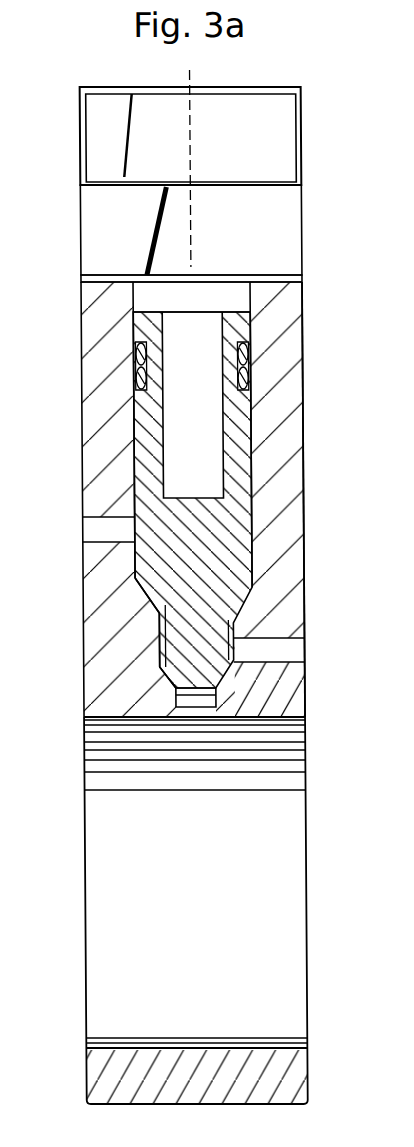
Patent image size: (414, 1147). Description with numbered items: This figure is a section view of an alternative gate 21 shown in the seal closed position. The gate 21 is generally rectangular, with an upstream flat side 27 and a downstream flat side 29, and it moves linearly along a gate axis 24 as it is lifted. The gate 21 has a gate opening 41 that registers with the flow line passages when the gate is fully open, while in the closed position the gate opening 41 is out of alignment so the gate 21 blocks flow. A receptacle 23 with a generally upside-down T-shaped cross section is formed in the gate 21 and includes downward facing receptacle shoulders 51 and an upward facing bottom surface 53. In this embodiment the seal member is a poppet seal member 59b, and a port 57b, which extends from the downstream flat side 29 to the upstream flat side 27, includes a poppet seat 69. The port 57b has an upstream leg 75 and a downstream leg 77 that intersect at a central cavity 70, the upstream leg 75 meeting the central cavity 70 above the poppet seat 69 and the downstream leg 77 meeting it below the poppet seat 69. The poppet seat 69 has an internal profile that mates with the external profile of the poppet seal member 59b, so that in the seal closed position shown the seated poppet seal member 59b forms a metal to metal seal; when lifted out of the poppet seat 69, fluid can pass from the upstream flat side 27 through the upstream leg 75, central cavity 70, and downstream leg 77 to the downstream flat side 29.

The gate 21 is at (320, 308).
The receptacle 23 is at (285, 250).
The gate axis 24 is at (193, 133).
The upstream flat side 27 is at (81, 413).
The downstream flat side 29 is at (302, 588).
The gate opening 41 is at (262, 982).
The downward facing receptacle shoulders 51 is at (277, 188).
The bottom surface 53 is at (108, 276).
The port 57b is at (267, 652).
The poppet seal member 59b is at (210, 543).
The poppet seat 69 is at (160, 596).
The central cavity 70 is at (155, 641).
The upstream leg 75 is at (92, 530).
The downstream leg 77 is at (290, 650).